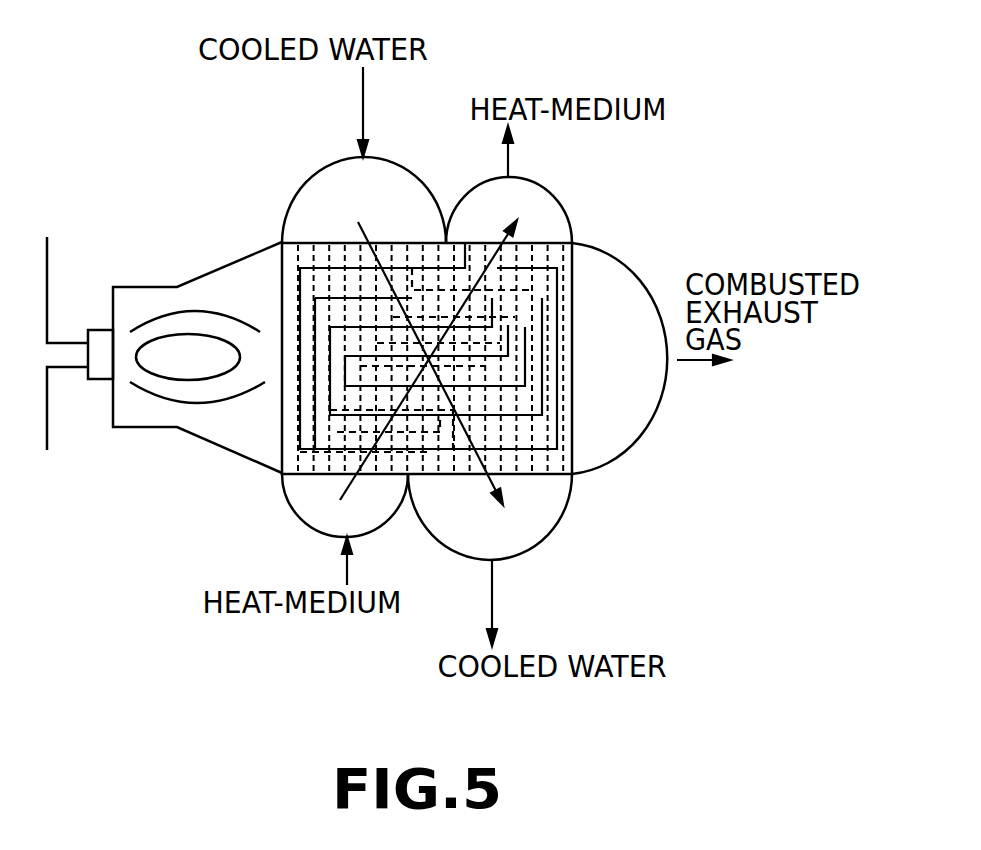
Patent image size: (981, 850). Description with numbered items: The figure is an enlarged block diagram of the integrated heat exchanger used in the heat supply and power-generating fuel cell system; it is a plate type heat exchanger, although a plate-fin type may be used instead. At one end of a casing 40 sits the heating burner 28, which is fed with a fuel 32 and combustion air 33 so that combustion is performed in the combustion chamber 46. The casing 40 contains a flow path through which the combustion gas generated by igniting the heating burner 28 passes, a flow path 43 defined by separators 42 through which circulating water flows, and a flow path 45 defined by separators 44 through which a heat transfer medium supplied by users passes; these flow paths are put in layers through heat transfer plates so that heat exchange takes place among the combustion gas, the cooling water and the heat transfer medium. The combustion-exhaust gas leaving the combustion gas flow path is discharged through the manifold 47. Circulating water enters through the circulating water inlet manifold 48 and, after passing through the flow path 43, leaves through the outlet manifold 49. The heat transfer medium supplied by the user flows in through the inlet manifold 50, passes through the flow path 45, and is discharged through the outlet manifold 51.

The heating burner 28 is at (100, 368).
The fuel 32 is at (43, 413).
The combustion air 33 is at (47, 275).
The casing 40 is at (576, 192).
The separators 42 is at (320, 243).
The flow path 43 is at (333, 258).
The separators 44 is at (318, 456).
The flow path 45 is at (325, 462).
The combustion chamber 46 is at (218, 425).
The manifold for combustion-exhaust gas 47 is at (628, 435).
The circulating water inlet manifold 48 is at (332, 175).
The outlet manifold for the circulating water 49 is at (535, 523).
The inlet manifold for the heat transfer medium 50 is at (378, 510).
The outlet manifold for the heat transfer medium 51 is at (487, 192).